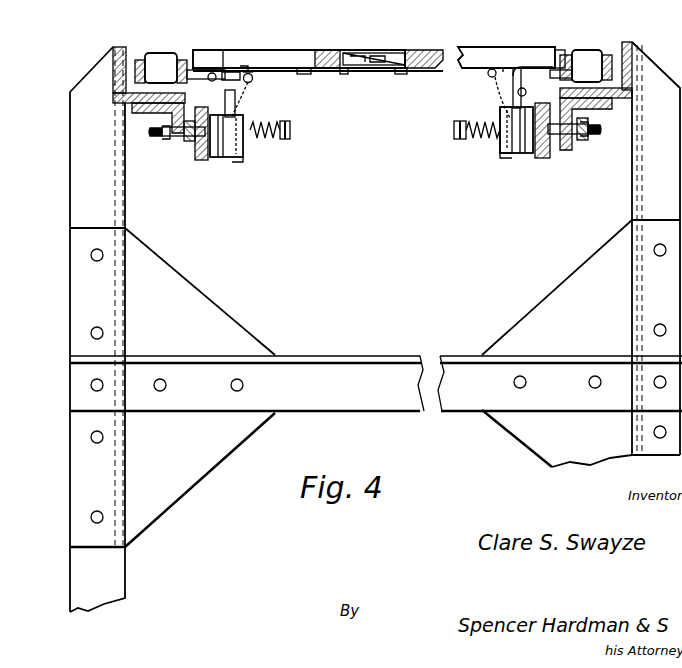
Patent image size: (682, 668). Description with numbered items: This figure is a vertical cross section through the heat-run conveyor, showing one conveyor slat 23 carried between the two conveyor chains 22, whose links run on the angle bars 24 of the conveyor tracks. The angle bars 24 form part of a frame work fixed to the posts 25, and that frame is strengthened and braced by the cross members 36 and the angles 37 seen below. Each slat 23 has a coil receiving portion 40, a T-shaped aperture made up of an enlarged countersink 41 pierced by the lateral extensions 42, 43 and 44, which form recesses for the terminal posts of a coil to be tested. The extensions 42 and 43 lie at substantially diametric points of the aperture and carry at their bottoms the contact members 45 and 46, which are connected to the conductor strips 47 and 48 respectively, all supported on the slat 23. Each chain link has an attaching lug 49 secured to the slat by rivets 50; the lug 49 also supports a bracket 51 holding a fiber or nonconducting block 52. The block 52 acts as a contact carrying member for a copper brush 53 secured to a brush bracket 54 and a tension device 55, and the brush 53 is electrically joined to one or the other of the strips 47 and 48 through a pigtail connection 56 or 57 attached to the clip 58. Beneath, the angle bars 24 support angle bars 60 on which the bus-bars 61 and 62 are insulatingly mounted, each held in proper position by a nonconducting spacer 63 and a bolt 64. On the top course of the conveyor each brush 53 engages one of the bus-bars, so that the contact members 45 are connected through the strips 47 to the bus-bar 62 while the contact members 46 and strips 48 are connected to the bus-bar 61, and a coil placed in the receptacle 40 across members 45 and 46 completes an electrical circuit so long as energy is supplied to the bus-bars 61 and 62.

The conveyor chains 22 is at (182, 60).
The conveyor slats 23 is at (294, 50).
The angle bars 24 is at (122, 47).
The posts 25 is at (70, 196).
The cross members 36 is at (372, 400).
The angles 37 is at (195, 297).
The coil receiving portions 40 is at (398, 53).
The enlarged countersink 41 is at (352, 56).
The lateral extension 42 is at (372, 56).
The lateral extension 43 is at (372, 70).
The lateral extension 44 is at (422, 52).
The contact member 45 is at (343, 75).
The contact member 46 is at (303, 75).
The conductor strip 47 is at (327, 50).
The conductor strip 48 is at (244, 66).
The attaching lug 49 is at (213, 70).
The rivets 50 is at (210, 82).
The brackets 51 is at (237, 80).
The nonconducting blocks 52 is at (237, 163).
The copper brush 53 is at (226, 158).
The brush bracket 54 is at (505, 145).
The tension device 55 is at (272, 140).
The pigtail connection 56 is at (500, 95).
The pigtail connection 57 is at (240, 104).
The clip 58 is at (252, 82).
The angle bars 60 is at (148, 113).
The bus-bar 61 is at (200, 160).
The bus-bar 62 is at (545, 159).
The nonconducting spacer 63 is at (186, 145).
The bolt 64 is at (172, 145).